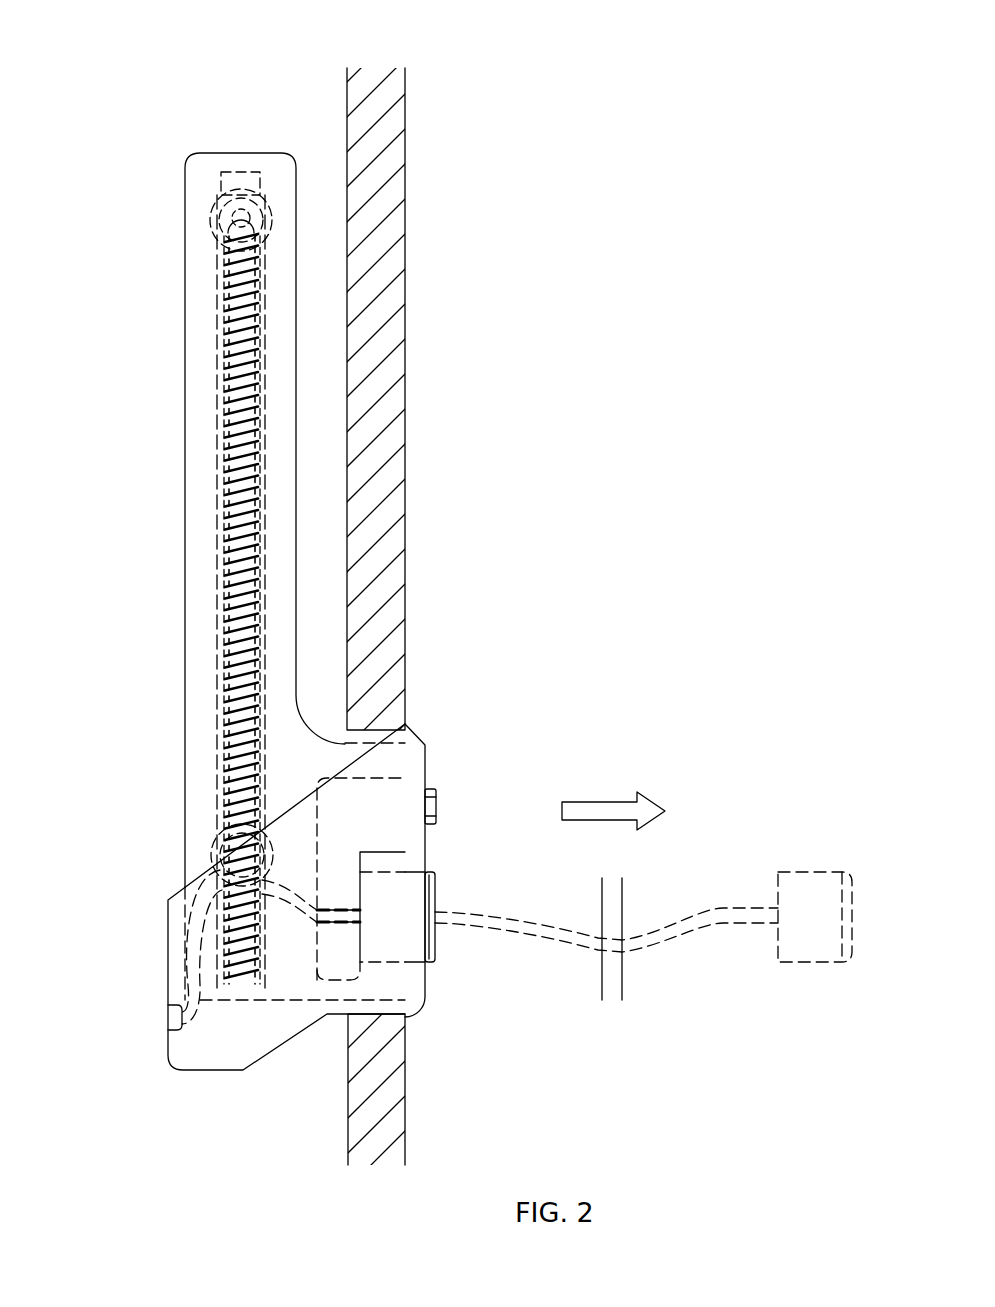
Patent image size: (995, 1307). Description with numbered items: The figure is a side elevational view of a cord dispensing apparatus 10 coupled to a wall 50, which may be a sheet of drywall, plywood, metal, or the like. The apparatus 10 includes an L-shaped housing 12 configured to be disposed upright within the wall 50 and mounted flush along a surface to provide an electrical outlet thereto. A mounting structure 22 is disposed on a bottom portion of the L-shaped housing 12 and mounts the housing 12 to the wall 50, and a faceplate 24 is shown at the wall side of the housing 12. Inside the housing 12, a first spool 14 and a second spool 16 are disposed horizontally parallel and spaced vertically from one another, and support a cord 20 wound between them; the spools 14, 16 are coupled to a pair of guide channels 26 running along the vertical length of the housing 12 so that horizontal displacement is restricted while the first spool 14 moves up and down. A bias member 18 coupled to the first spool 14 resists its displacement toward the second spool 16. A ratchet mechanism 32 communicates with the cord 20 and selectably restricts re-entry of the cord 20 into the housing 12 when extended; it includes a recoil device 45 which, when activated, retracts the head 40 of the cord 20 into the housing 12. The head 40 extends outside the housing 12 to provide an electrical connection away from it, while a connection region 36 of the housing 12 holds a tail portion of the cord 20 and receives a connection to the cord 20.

The cord dispensing apparatus 10 is at (114, 102).
The L-shaped housing 12 is at (192, 292).
The first spool 14 is at (212, 208).
The second spool 16 is at (212, 852).
The bias member 18 is at (224, 460).
The cord 20 is at (217, 375).
The mounting structure 22 is at (273, 1028).
The faceplate 24 is at (427, 745).
The guide channels 26 is at (203, 942).
The ratchet mechanism 32 is at (378, 830).
The connection region 36 is at (158, 1019).
The head 40 is at (815, 872).
The recoil device 45 is at (436, 808).
The wall 50 is at (397, 191).